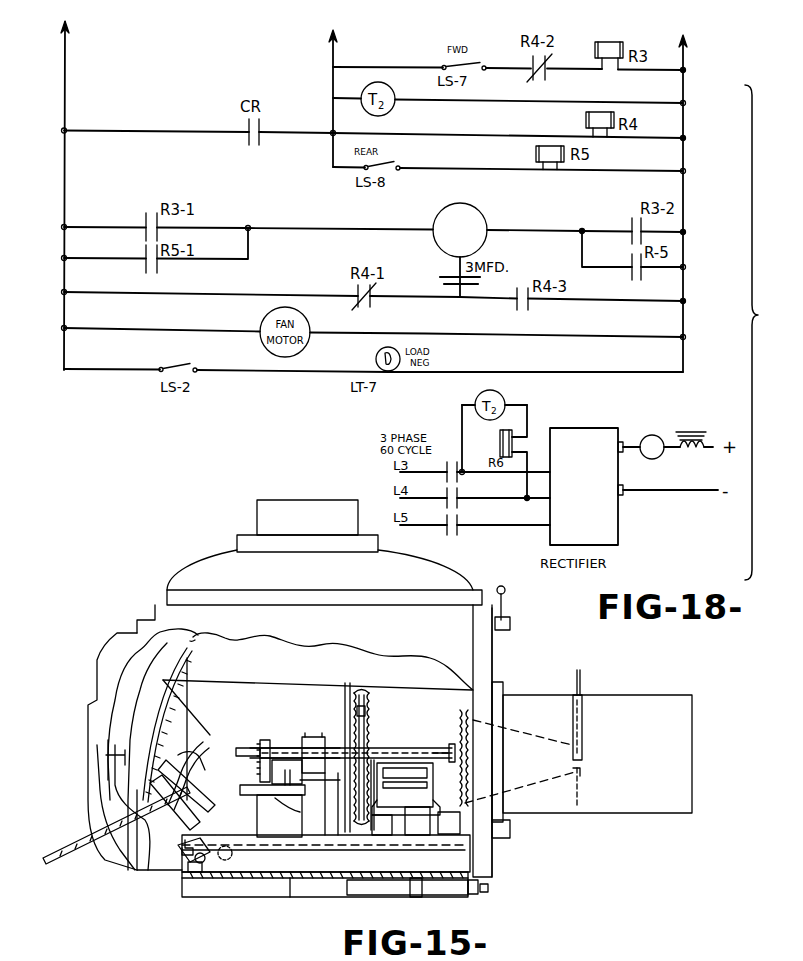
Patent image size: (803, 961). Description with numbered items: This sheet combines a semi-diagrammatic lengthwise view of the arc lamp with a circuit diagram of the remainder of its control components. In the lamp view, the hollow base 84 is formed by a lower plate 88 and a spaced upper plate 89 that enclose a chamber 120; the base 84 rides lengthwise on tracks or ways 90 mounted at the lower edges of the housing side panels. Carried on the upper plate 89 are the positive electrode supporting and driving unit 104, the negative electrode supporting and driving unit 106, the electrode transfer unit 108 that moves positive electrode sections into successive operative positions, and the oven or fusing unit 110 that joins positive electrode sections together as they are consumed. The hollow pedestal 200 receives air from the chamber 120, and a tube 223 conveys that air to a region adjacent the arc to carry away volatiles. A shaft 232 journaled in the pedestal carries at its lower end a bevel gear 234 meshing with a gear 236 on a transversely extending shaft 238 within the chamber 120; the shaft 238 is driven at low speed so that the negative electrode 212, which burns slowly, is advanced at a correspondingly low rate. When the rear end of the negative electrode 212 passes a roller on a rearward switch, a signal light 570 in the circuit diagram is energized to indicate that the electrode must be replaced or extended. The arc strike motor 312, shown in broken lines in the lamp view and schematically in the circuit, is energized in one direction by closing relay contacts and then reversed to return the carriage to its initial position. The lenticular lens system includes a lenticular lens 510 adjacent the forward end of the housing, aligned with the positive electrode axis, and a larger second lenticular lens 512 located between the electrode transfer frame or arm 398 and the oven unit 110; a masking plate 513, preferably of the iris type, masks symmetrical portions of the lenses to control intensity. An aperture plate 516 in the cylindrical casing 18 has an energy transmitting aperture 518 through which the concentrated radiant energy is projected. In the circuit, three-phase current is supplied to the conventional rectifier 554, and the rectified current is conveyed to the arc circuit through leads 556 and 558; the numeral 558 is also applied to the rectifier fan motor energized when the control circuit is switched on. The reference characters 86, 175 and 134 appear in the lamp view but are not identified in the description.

In FIG. 18, the arc strike motor 312 is at (485, 220).
In FIG. 15, the arc strike motor 312 is at (225, 860).
In FIG. 18, the rectifier output lead 558 is at (632, 494).
In FIG. 18, the signal light 570 is at (388, 372).
In FIG. 18, the rectifier 554 is at (598, 489).
In FIG. 18, the rectifier output lead 556 is at (640, 456).
In FIG. 15, the curved rack 86 is at (190, 661).
In FIG. 15, the masking plate 513 is at (345, 702).
In FIG. 15, the second lenticular lens 512 is at (369, 712).
In FIG. 15, the lenticular lens 510 is at (462, 716).
In FIG. 15, the oven or fusing unit 110 is at (313, 735).
In FIG. 15, the tube 223 is at (205, 737).
In FIG. 15, the shaft 175 is at (277, 748).
In FIG. 15, the positive electrode supporting and driving unit 104 is at (275, 754).
In FIG. 15, the negative electrode supporting and driving unit 106 is at (170, 758).
In FIG. 15, the electrode transfer unit 108 is at (428, 752).
In FIG. 15, the electrode transfer frame or arm 398 is at (380, 793).
In FIG. 15, the housing 134 is at (272, 811).
In FIG. 15, the pedestal 200 is at (210, 817).
In FIG. 15, the negative electrode 212 is at (62, 848).
In FIG. 15, the shaft 232 is at (118, 870).
In FIG. 15, the bevel gear 234 is at (186, 858).
In FIG. 15, the gear 236 is at (199, 864).
In FIG. 15, the transversely extending shaft 238 is at (194, 875).
In FIG. 15, the base 84 is at (296, 878).
In FIG. 15, the tracks or ways 90 is at (310, 890).
In FIG. 15, the lower plate 88 is at (350, 893).
In FIG. 15, the chamber 120 is at (385, 866).
In FIG. 15, the upper plate 89 is at (410, 844).
In FIG. 15, the aperture plate 516 is at (583, 726).
In FIG. 15, the energy transmitting aperture 518 is at (582, 768).
In FIG. 15, the cylindrical casing 18 is at (605, 812).